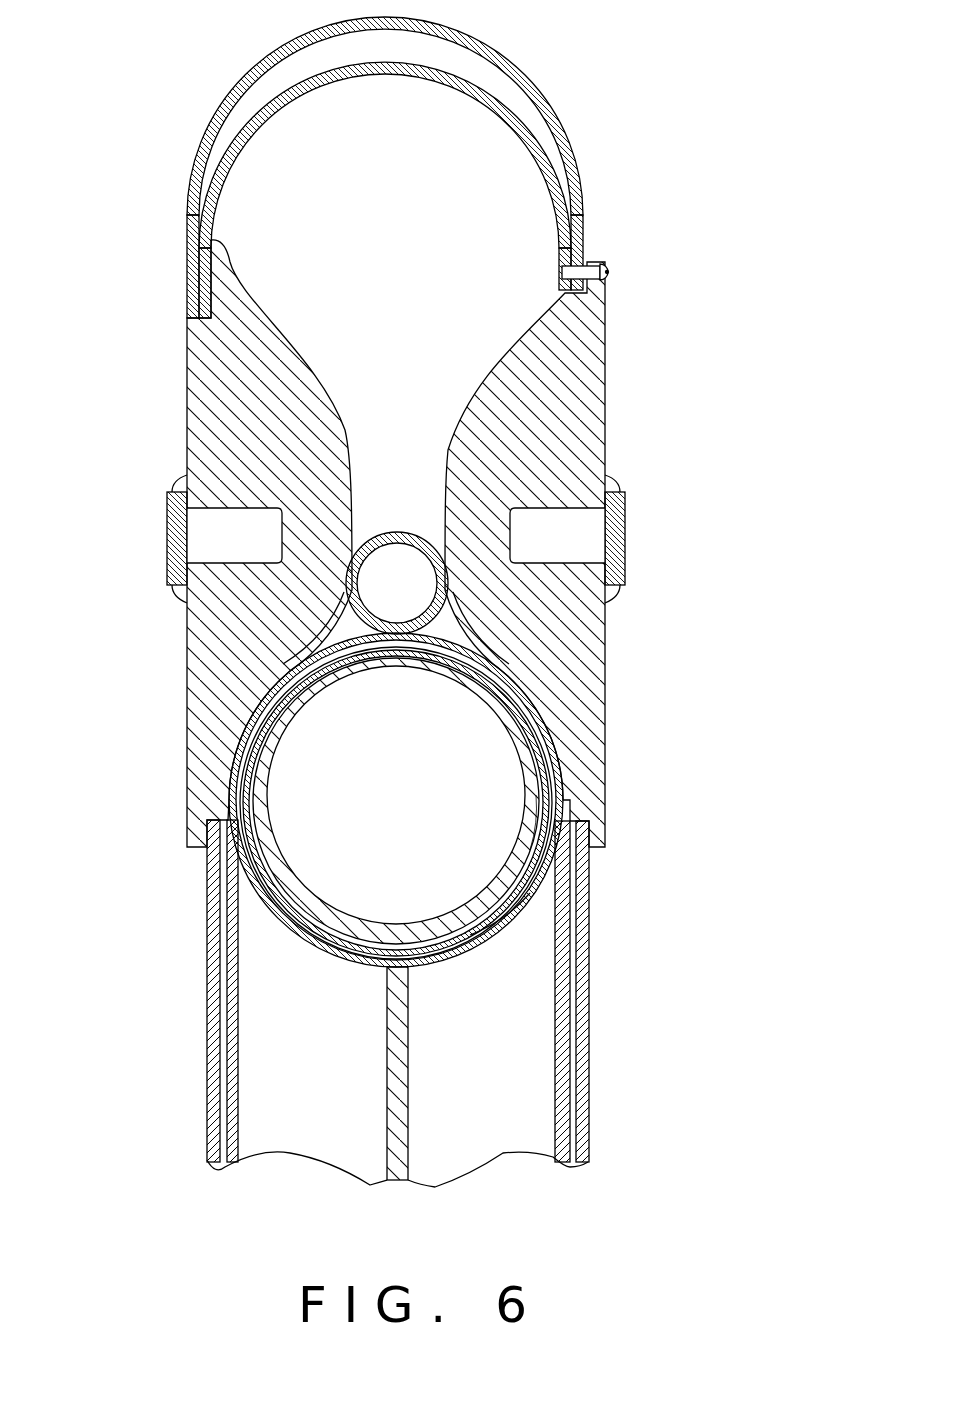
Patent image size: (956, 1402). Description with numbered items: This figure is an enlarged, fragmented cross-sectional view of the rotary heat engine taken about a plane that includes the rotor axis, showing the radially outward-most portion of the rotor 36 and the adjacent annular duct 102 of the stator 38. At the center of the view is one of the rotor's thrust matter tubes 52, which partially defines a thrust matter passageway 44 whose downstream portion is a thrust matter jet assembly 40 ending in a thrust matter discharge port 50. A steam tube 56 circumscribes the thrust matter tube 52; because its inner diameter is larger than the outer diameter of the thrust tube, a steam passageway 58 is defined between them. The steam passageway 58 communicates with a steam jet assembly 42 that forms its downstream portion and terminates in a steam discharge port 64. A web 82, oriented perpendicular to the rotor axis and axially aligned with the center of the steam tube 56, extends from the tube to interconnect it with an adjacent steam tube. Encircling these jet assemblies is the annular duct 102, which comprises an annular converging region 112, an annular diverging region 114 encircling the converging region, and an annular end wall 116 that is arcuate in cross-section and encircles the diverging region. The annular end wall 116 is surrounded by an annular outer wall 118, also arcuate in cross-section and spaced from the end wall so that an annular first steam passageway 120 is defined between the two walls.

The rotor 36 is at (523, 1020).
The stator 38 is at (573, 425).
The thrust matter jet assembly 40 is at (492, 785).
The steam jet assembly 42 is at (522, 587).
The thrust matter passageway 44 is at (492, 752).
The thrust matter discharge port 50 is at (475, 726).
The thrust matter tube 52 is at (527, 692).
The steam tube 56 is at (530, 885).
The steam passageway 58 is at (549, 821).
The steam discharge port 64 is at (425, 578).
The web 82 is at (410, 1118).
The annular duct 102 is at (389, 543).
The annular converging region 112 is at (310, 645).
The annular diverging region 114 is at (337, 375).
The annular end wall 116 is at (263, 110).
The annular outer wall 118 is at (277, 48).
The annular first steam passageway 120 is at (480, 72).